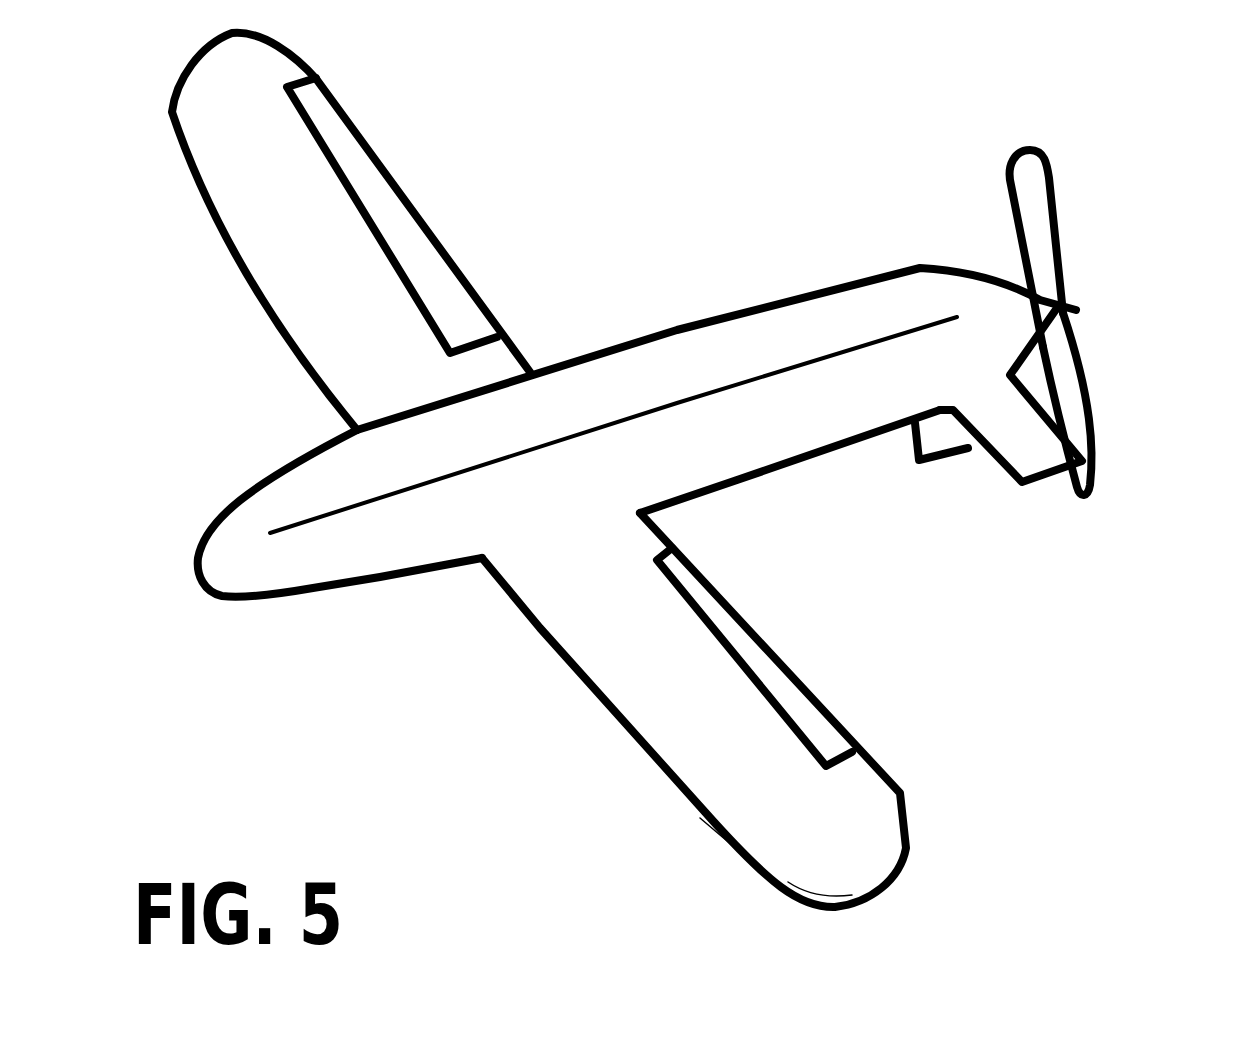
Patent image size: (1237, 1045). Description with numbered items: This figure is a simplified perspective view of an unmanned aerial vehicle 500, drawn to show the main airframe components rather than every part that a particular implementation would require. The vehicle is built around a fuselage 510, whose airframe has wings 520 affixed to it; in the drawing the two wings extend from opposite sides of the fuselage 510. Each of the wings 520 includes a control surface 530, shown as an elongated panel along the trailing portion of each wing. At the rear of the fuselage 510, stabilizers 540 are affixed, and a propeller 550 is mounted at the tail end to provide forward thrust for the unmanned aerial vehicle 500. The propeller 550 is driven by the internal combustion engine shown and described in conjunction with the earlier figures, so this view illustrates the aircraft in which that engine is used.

The unmanned aerial vehicle 500 is at (768, 162).
The fuselage 510 is at (593, 347).
The wings 520 is at (247, 277).
The control surface 530 is at (417, 240).
The stabilizers 540 is at (933, 433).
The propeller 550 is at (1043, 253).